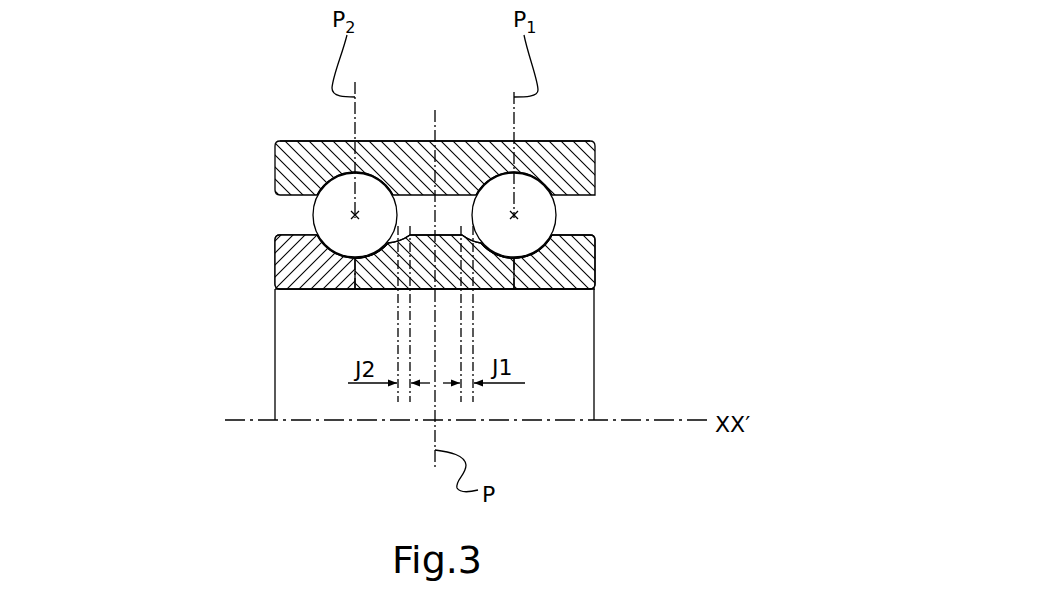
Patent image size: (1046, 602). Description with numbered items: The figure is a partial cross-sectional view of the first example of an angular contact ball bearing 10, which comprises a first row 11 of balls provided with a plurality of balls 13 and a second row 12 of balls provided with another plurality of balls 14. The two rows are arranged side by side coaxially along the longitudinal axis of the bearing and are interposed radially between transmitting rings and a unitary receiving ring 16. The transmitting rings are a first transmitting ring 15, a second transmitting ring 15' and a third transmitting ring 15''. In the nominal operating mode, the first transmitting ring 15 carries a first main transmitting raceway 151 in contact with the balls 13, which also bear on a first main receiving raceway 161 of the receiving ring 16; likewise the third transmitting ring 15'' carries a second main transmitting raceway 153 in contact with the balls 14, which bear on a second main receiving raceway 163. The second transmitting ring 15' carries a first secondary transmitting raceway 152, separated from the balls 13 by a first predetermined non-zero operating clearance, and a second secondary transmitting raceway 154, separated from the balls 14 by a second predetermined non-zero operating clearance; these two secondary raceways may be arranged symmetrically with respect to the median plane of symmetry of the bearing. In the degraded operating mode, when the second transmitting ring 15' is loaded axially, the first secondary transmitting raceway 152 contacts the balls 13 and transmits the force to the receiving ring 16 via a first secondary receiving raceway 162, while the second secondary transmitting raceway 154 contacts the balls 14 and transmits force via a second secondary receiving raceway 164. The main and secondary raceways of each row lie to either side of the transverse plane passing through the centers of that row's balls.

The angular contact ball bearing 10 is at (603, 118).
The first row of balls 11 is at (527, 160).
The second row of balls 12 is at (337, 160).
The balls 13 is at (557, 213).
The balls 14 is at (313, 215).
The first transmitting ring 15 is at (479, 281).
The second transmitting ring 15' is at (475, 319).
The third transmitting ring 15'' is at (259, 268).
The receiving ring 16 is at (595, 173).
The first main transmitting raceway 151 is at (572, 289).
The first secondary transmitting raceway 152 is at (480, 289).
The second main transmitting raceway 153 is at (325, 258).
The second secondary transmitting raceway 154 is at (396, 258).
The first main receiving raceway 161 is at (488, 184).
The first secondary receiving raceway 162 is at (533, 183).
The second main receiving raceway 163 is at (385, 184).
The second secondary receiving raceway 164 is at (318, 183).